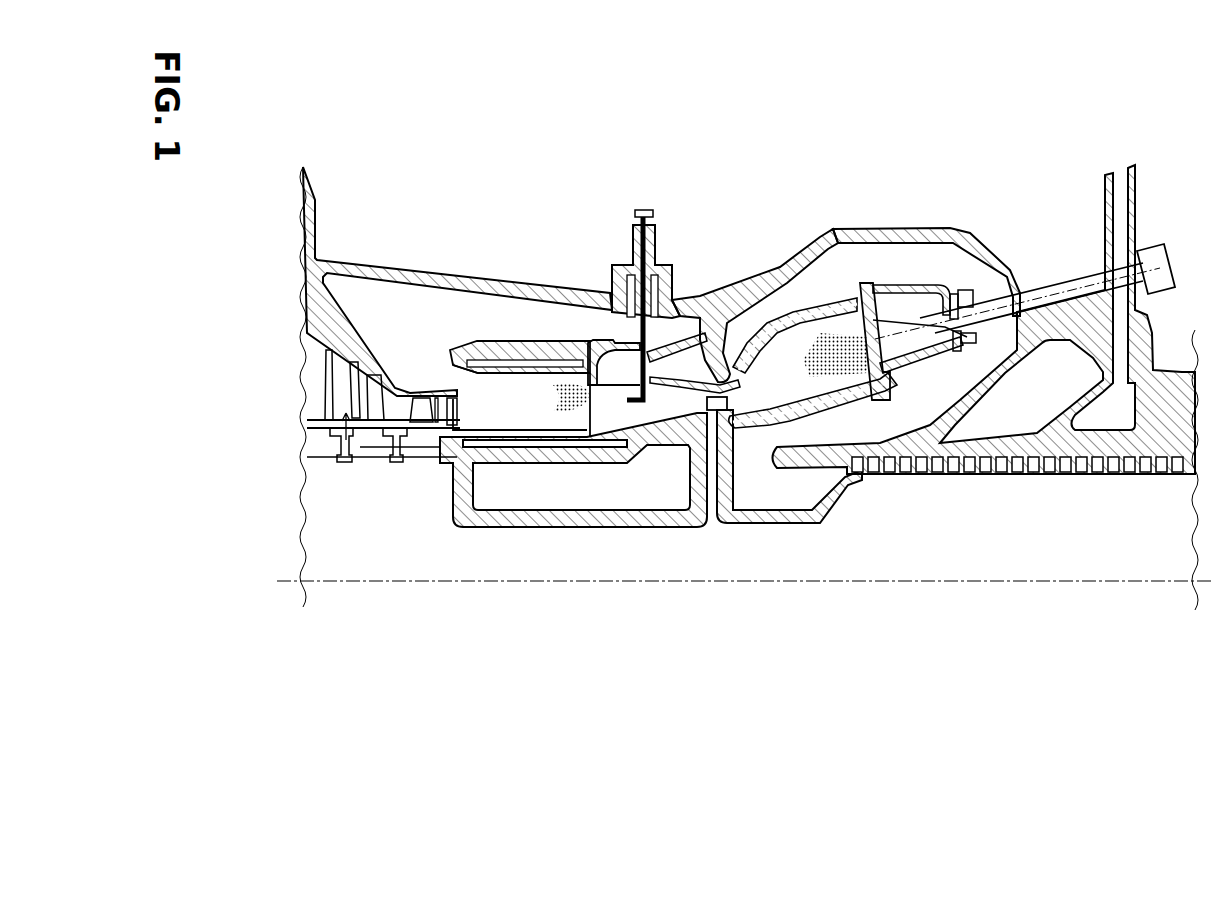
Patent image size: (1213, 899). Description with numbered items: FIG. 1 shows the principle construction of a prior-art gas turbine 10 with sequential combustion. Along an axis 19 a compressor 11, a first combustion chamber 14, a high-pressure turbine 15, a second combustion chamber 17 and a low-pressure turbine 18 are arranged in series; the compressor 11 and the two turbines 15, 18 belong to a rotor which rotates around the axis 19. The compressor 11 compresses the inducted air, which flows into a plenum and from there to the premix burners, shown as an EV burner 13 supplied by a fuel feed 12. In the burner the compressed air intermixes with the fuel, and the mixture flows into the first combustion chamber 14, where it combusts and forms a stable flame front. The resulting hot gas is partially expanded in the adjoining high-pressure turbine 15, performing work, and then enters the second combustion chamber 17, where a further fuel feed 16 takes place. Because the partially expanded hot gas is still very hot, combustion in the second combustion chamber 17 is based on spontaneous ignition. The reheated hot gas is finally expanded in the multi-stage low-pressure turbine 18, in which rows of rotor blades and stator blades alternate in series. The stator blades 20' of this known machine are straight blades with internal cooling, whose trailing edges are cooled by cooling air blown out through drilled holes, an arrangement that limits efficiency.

The gas turbine 10 is at (488, 136).
The compressor 11 is at (1001, 539).
The fuel feed 12 is at (1157, 250).
The EV burner 13 is at (905, 328).
The first combustion chamber 14 is at (791, 395).
The high-pressure turbine 15 is at (726, 567).
The fuel feed 16 is at (650, 210).
The second combustion chamber 17 is at (513, 409).
The low-pressure turbine 18 is at (431, 539).
The axis 19 is at (880, 581).
The stator blade 20' is at (383, 558).